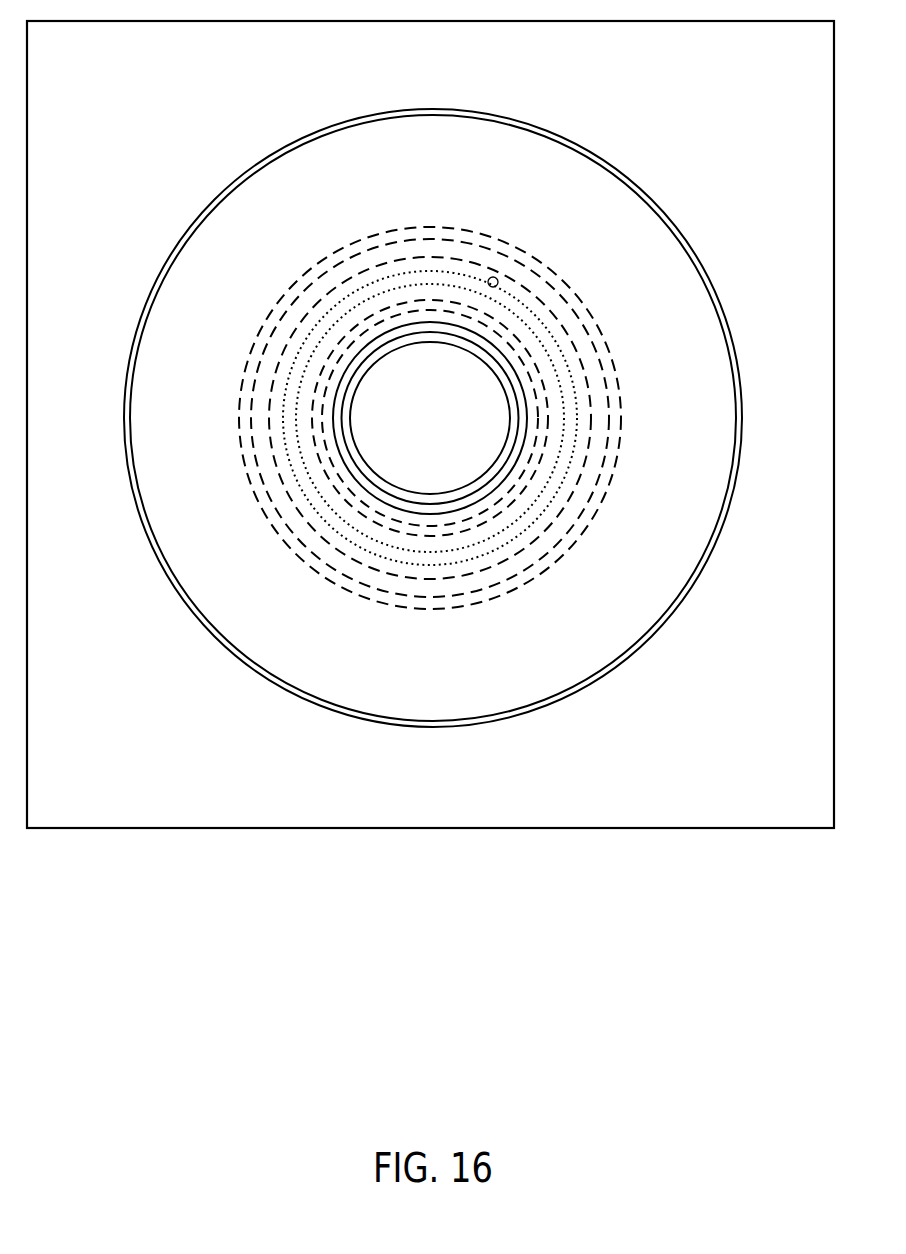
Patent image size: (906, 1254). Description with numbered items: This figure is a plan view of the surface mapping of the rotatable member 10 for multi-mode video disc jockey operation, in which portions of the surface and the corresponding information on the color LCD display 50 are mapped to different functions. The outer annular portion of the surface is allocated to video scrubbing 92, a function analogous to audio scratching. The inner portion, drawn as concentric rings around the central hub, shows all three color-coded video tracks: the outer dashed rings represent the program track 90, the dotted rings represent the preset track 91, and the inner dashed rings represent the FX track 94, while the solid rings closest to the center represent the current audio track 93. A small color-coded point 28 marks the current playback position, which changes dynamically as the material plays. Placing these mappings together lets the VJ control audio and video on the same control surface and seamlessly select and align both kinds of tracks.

The rotatable member 10 is at (247, 167).
The high resolution color LCD display 50 is at (670, 238).
The current position point 28 is at (494, 276).
The video scrubbing portion 92 is at (631, 529).
The current audio track 93 is at (349, 473).
The FX track 94 is at (368, 315).
The preset track 91 is at (468, 562).
The program track 90 is at (330, 547).